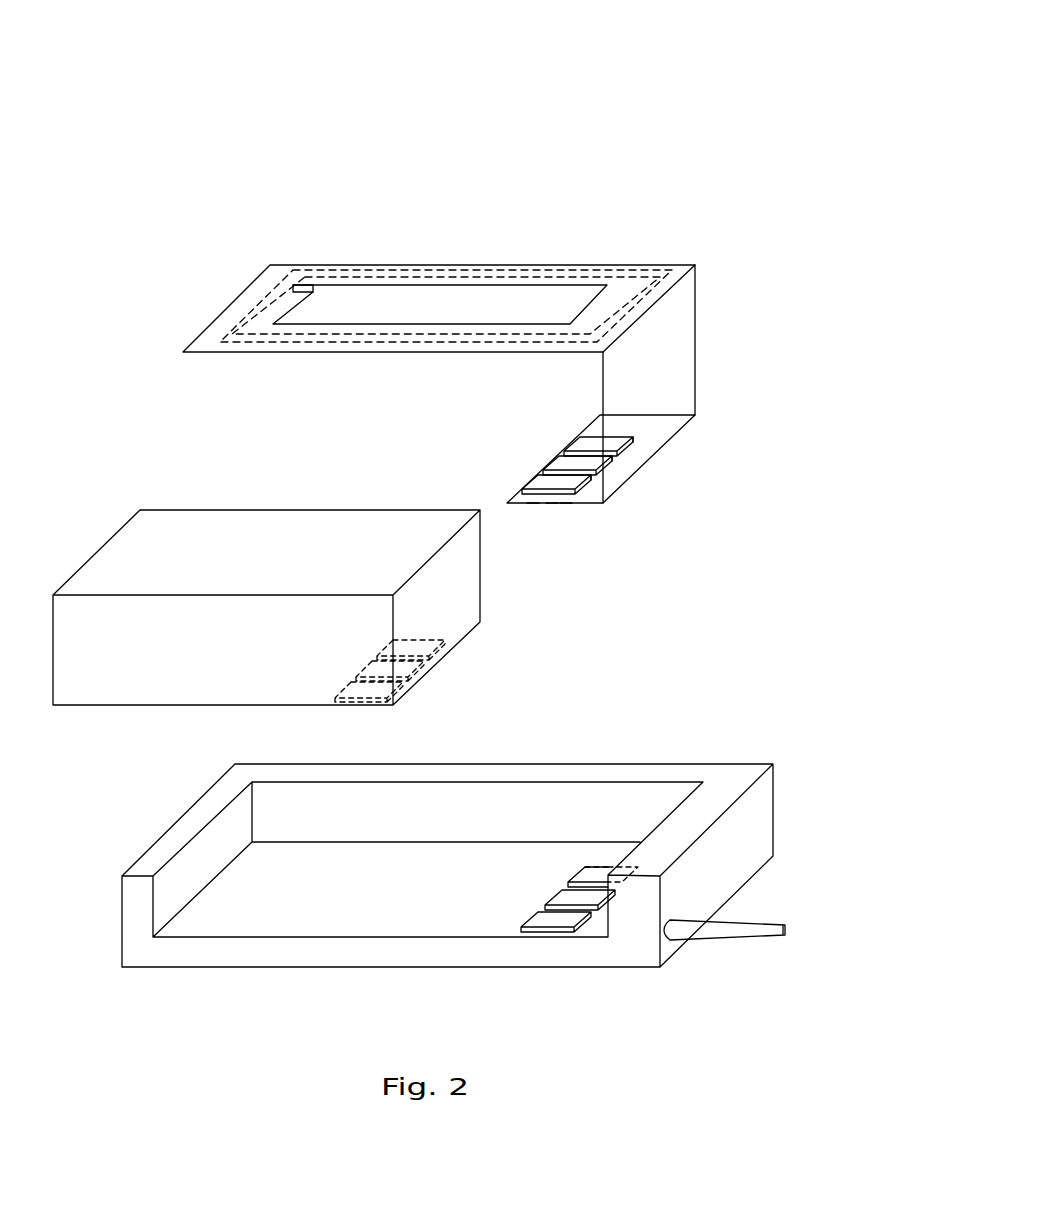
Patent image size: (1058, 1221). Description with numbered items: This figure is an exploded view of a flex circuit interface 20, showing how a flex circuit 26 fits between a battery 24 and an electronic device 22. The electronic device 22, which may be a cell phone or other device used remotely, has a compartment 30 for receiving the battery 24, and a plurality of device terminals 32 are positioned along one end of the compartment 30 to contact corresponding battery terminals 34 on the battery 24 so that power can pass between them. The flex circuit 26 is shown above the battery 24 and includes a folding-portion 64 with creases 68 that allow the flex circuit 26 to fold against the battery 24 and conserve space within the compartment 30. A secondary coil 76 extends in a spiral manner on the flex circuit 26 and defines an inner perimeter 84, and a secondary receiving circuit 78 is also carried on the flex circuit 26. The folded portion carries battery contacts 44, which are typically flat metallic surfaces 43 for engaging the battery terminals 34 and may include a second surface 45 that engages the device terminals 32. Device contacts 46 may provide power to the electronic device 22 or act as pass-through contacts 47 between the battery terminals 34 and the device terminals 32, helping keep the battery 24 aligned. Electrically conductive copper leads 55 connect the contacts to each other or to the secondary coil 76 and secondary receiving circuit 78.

The flex circuit interface 20 is at (658, 122).
The electronic device 22 is at (168, 965).
The battery 24 is at (203, 510).
The flex circuit 26 is at (285, 265).
The compartment 30 is at (364, 897).
The device terminals 32 is at (597, 878).
The battery terminals 34 is at (445, 640).
The flat metallic surfaces 43 is at (543, 487).
The battery contacts 44 is at (630, 449).
The second surface 45 is at (565, 505).
The device contacts 46 is at (552, 505).
The pass-through contacts 47 is at (533, 505).
The electrically conductive copper leads 55 is at (305, 290).
The folding-portion 64 is at (695, 350).
The creases 68 is at (677, 283).
The secondary coil 76 is at (270, 308).
The secondary receiving circuit 78 is at (463, 287).
The inner perimeter 84 is at (602, 302).